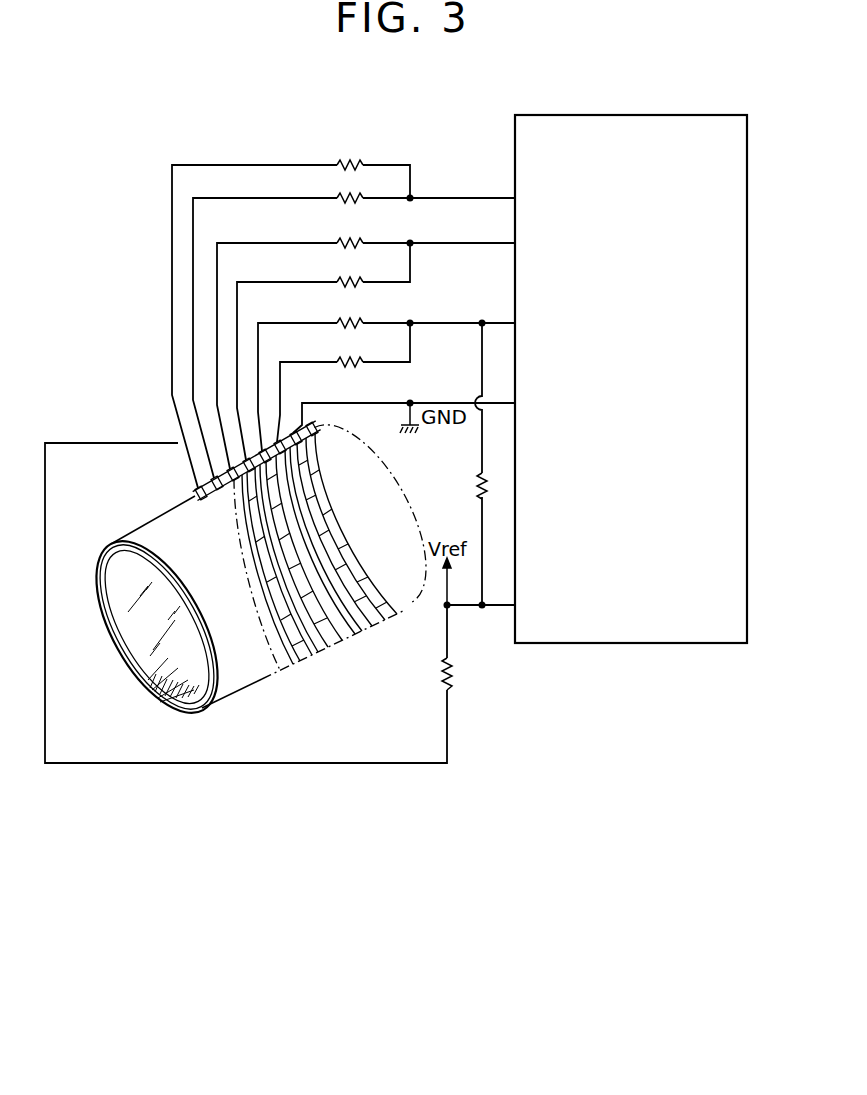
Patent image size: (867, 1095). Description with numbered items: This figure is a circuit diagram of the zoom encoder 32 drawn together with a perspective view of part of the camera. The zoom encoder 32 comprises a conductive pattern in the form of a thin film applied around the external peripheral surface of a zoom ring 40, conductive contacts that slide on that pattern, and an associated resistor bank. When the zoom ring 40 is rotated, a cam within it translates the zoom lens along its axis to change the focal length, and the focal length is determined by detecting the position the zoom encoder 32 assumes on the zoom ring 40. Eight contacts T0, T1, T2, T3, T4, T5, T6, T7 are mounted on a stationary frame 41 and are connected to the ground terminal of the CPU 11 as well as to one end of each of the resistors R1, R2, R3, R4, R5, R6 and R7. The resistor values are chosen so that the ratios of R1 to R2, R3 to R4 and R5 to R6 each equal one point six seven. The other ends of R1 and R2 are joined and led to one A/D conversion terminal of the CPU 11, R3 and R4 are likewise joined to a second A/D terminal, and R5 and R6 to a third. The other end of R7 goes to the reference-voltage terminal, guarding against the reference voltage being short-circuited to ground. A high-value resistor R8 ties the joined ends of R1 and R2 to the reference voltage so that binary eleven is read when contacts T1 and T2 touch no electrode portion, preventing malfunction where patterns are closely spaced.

The CPU 11 is at (725, 126).
The zoom encoder 32 is at (128, 388).
The zoom ring 40 is at (141, 546).
The stationary frame 41 is at (357, 643).
The resistor R1 is at (352, 362).
The resistor R2 is at (352, 323).
The resistor R3 is at (344, 281).
The resistor R4 is at (344, 242).
The resistor R5 is at (344, 197).
The resistor R6 is at (344, 163).
The resistor R7 is at (452, 673).
The resistor R8 is at (480, 480).
The contact T0 is at (321, 430).
The contact T1 is at (298, 432).
The contact T2 is at (281, 440).
The contact T3 is at (265, 449).
The contact T4 is at (247, 458).
The contact T5 is at (230, 468).
The contact T6 is at (218, 490).
The contact T7 is at (201, 500).